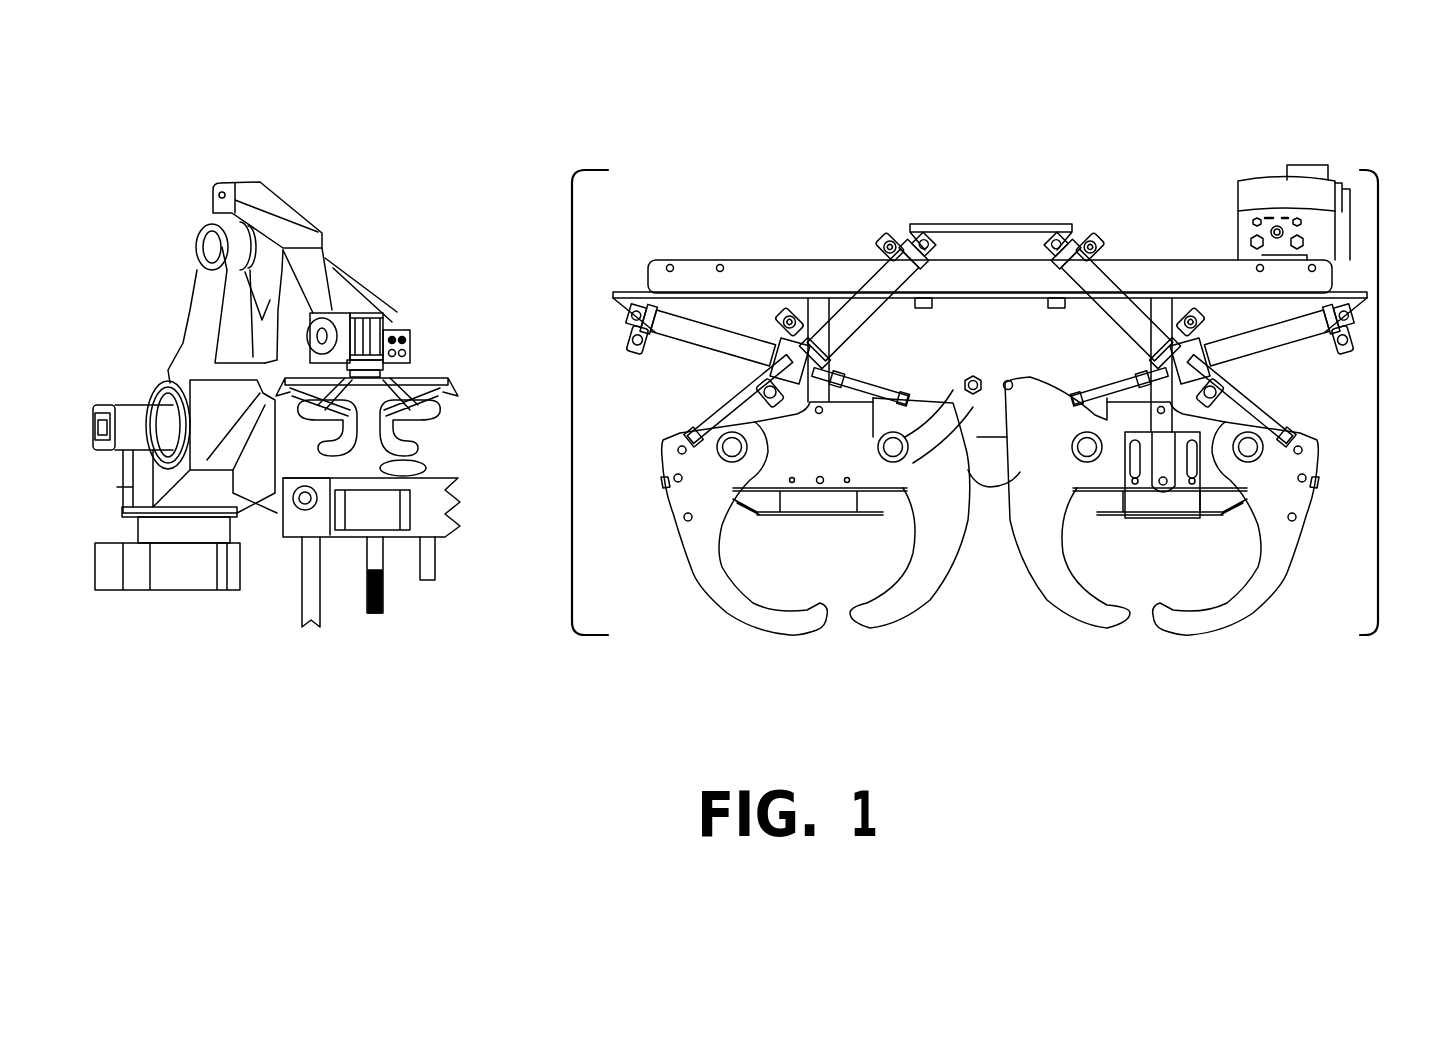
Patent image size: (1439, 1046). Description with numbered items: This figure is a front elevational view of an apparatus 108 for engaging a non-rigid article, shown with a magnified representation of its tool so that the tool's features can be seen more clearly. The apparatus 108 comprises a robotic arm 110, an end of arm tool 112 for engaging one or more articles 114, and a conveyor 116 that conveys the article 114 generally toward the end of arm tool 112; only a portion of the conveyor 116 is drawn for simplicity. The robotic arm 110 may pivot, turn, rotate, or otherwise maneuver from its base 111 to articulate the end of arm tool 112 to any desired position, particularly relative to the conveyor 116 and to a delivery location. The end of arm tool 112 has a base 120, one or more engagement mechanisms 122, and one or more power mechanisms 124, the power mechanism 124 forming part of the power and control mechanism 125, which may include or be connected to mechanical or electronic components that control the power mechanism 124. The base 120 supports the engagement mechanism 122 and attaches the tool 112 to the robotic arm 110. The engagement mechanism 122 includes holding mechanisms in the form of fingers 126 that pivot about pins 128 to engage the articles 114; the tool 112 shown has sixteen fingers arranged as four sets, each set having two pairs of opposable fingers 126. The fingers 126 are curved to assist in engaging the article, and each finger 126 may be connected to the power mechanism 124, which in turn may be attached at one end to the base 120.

The apparatus 108 is at (302, 115).
The robotic arm 110 is at (228, 183).
The base 111 is at (138, 597).
The end of arm tool 112 is at (462, 375).
The article 114 is at (440, 467).
The conveyor 116 is at (486, 500).
The base 120 is at (740, 258).
The engagement mechanism 122 is at (1070, 655).
The power mechanism 124 is at (873, 273).
The power and control mechanism 125 is at (1240, 180).
The finger 126 is at (727, 615).
The pin 128 is at (733, 445).